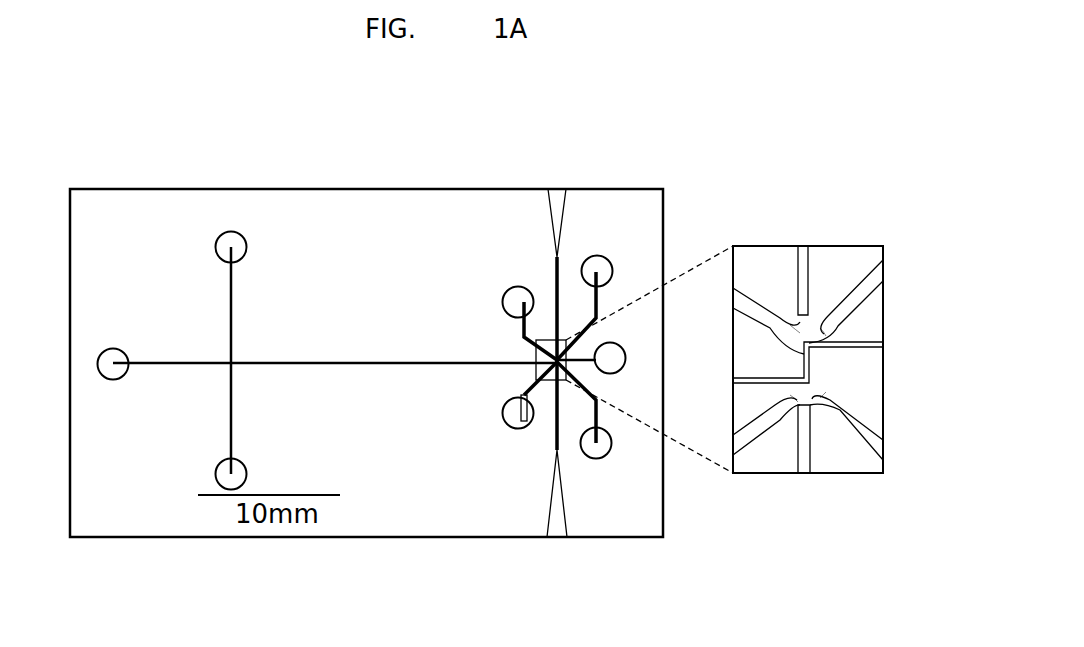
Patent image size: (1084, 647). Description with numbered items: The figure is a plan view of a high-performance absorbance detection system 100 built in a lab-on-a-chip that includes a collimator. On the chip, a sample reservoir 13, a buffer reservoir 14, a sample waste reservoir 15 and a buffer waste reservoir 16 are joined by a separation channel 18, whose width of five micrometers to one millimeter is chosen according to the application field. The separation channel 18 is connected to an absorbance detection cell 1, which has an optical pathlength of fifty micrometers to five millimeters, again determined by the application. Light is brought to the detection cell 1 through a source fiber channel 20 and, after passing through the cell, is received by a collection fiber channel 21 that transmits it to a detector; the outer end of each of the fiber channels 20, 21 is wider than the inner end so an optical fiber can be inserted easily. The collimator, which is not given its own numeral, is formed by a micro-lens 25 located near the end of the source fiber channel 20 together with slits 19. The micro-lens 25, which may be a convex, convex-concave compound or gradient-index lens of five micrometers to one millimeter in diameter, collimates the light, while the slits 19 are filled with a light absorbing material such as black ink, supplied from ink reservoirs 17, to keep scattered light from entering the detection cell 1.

The absorbance detection system 100 is at (186, 168).
The sample reservoir 13 is at (113, 349).
The buffer reservoir 14 is at (246, 248).
The sample waste reservoir 15 is at (221, 467).
The buffer waste reservoir 16 is at (627, 352).
The ink reservoir 17 is at (584, 268).
The separation channel 18 is at (357, 362).
The slit (channel) 19 is at (830, 340).
The source fiber channel 20 is at (557, 537).
The collection fiber channel 21 is at (557, 195).
The absorbance detection cell 1 is at (786, 324).
The micro-lens 25 is at (788, 401).